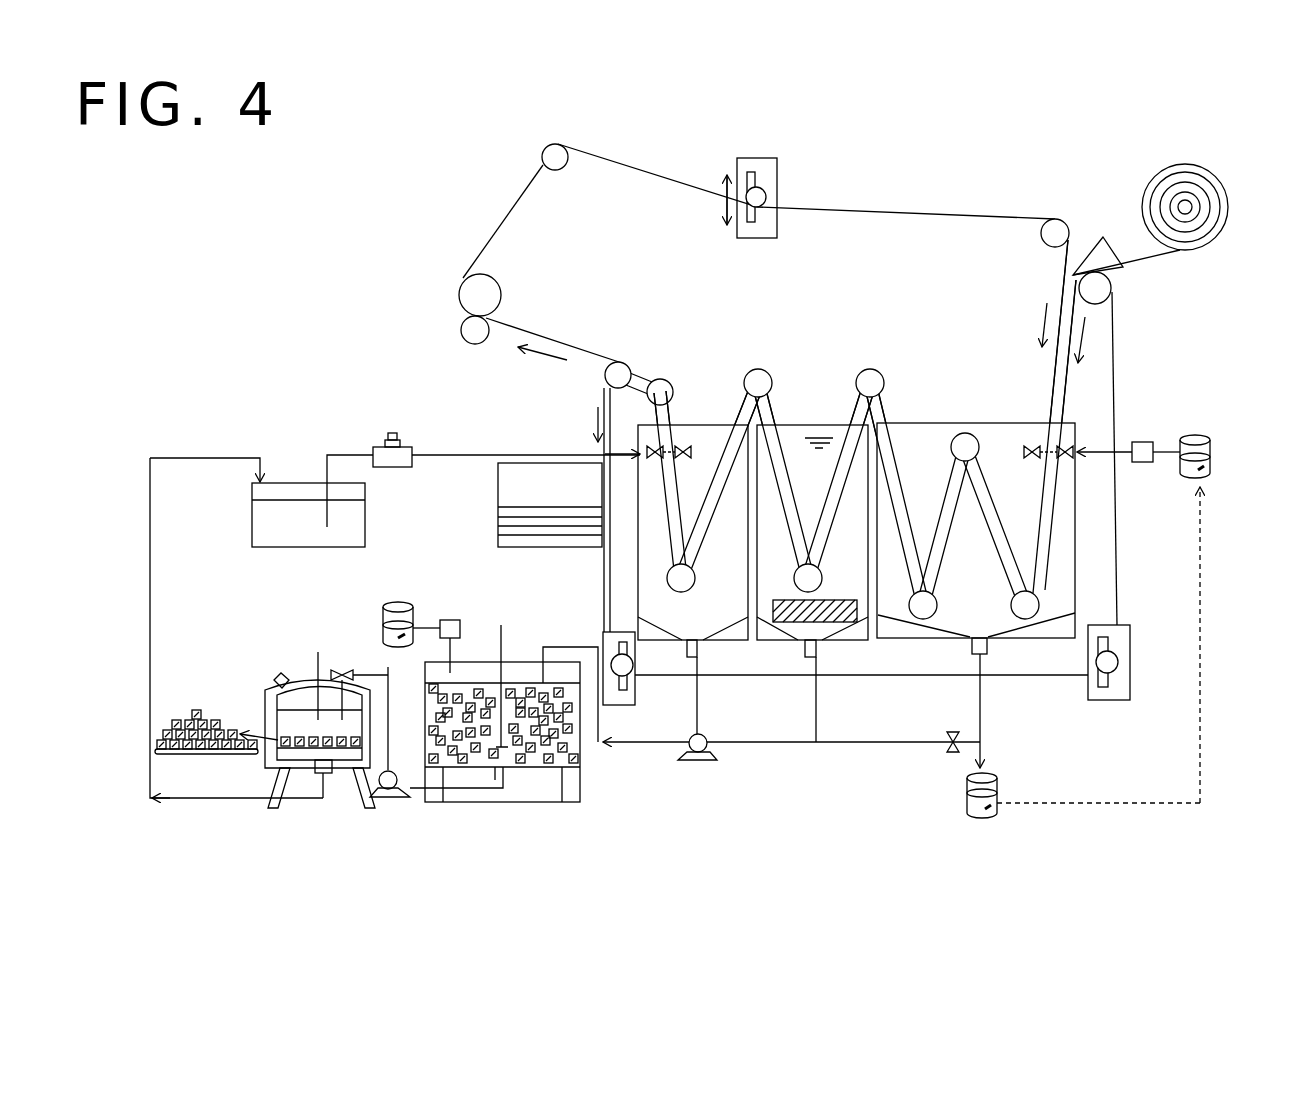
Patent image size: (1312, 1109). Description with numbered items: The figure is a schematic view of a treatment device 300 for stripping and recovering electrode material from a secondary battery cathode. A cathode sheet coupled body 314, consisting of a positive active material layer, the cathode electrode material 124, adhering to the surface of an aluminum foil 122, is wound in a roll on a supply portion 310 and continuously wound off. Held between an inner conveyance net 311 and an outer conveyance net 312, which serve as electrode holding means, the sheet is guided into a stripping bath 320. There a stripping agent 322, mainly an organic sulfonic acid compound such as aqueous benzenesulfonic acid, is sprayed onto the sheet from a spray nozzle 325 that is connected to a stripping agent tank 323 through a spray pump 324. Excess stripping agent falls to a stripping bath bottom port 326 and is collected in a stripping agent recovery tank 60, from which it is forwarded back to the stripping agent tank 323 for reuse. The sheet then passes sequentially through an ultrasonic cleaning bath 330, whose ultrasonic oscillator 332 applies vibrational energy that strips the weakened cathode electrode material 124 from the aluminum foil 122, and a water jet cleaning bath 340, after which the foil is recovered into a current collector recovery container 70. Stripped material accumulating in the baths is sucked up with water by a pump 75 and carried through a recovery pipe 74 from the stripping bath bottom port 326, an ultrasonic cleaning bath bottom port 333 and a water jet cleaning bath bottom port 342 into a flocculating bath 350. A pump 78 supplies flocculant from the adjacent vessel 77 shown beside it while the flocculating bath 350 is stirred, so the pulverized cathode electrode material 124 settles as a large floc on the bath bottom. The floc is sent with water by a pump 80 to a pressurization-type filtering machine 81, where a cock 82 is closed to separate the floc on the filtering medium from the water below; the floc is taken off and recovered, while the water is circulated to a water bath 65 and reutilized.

The treatment device 300 is at (395, 207).
The supply portion 310 is at (1090, 233).
The inner conveyance net 311 is at (947, 210).
The outer conveyance net 312 is at (1113, 347).
The cathode sheet coupled body 314 is at (1207, 165).
The stripping bath 320 is at (922, 437).
The stripping agent 322 is at (1213, 463).
The stripping agent tank 323 is at (1197, 435).
The spray pump 324 is at (1142, 462).
The spray nozzle 325 is at (1030, 443).
The stripping bath bottom port 326 is at (985, 653).
The ultrasonic cleaning bath 330 is at (795, 432).
The ultrasonic oscillator 332 is at (795, 620).
The ultrasonic cleaning bath bottom port 333 is at (813, 650).
The water jet cleaning bath 340 is at (712, 437).
The water jet cleaning bath bottom port 342 is at (695, 652).
The flocculating bath 350 is at (517, 657).
The stripping agent recovery tank 60 is at (997, 783).
The water bath 65 is at (303, 483).
The current collector recovery container 70 is at (498, 517).
The recovery pipe 74 is at (770, 743).
The pump 75 is at (697, 763).
The tank 77 is at (398, 602).
The pump 78 is at (453, 620).
The pump 80 is at (393, 797).
The pressurization-type filtering machine 81 is at (267, 700).
The cock 82 is at (337, 672).
The aluminum foil 122 is at (540, 500).
The cathode electrode material 124 is at (180, 722).